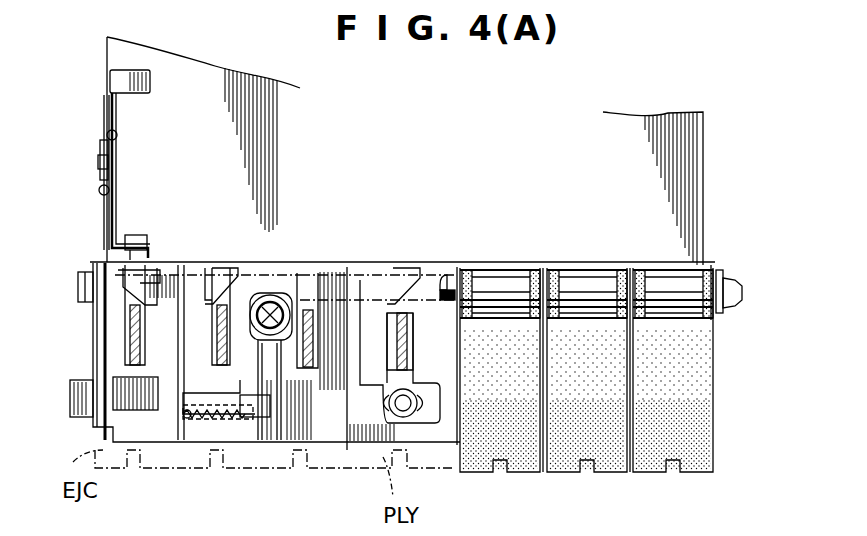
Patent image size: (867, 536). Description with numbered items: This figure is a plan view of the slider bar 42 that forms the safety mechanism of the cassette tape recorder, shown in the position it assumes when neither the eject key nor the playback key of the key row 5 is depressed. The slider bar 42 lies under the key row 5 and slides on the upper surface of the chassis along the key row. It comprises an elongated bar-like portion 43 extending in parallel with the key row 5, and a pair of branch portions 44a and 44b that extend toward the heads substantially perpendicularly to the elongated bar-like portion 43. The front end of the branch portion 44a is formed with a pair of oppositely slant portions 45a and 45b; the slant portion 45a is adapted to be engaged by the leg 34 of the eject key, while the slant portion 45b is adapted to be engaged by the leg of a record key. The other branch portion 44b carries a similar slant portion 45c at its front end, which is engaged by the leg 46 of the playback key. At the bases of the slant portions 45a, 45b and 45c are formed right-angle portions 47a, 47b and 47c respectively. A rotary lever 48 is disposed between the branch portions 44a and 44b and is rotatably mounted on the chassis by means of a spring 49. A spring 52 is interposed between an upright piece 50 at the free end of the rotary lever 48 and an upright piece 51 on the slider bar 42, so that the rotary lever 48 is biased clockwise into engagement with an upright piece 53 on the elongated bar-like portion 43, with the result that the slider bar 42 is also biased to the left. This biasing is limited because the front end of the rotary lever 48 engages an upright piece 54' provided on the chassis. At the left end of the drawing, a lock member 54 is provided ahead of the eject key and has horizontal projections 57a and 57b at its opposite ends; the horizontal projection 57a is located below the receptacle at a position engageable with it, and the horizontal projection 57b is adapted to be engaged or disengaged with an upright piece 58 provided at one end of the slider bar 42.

The key row 5 is at (673, 480).
The leg of the eject key 34 is at (128, 350).
The slider bar 42 is at (324, 397).
The elongated bar-like portion 43 is at (148, 407).
The branch portion 44a is at (167, 333).
The branch portion 44b is at (368, 333).
The slant portion 45a is at (128, 297).
The slant portion 45b is at (236, 293).
The slant portion 45c is at (433, 290).
The leg of the playback key 46 is at (410, 353).
The right-angle portion 47a is at (165, 292).
The right-angle portion 47b is at (230, 300).
The right-angle portion 47c is at (393, 297).
The rotary lever 48 is at (300, 400).
The spring 49 is at (292, 300).
The upright piece 50 is at (267, 380).
The upright piece 51 is at (178, 380).
The spring 52 is at (208, 417).
The upright piece 53 is at (242, 368).
The lock member 54 is at (129, 172).
The upright piece 54' is at (242, 461).
The horizontal projection 57a is at (149, 92).
The horizontal projection 57b is at (120, 243).
The upright piece 58 is at (150, 248).